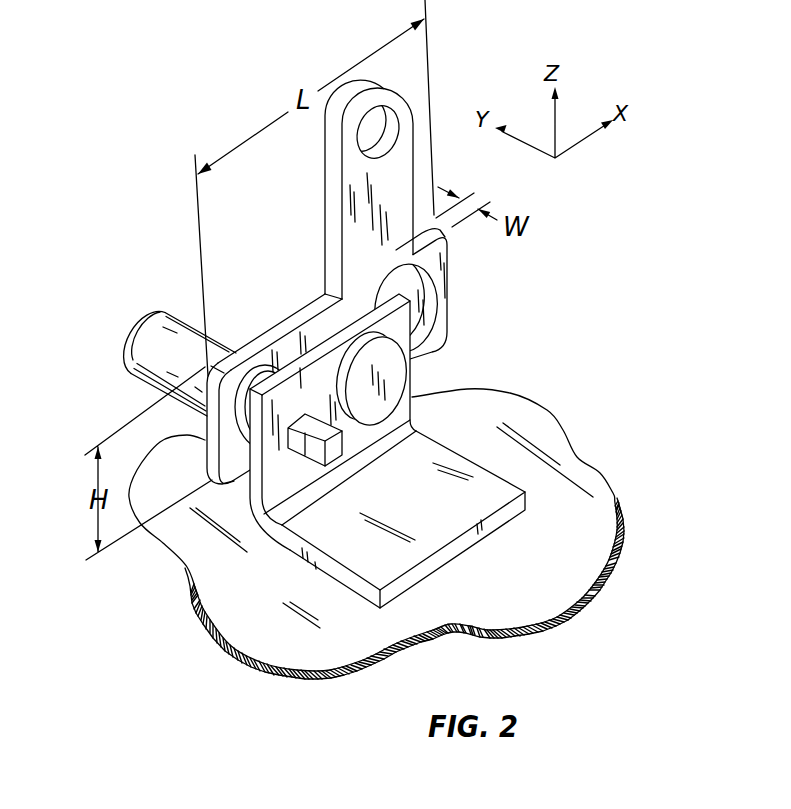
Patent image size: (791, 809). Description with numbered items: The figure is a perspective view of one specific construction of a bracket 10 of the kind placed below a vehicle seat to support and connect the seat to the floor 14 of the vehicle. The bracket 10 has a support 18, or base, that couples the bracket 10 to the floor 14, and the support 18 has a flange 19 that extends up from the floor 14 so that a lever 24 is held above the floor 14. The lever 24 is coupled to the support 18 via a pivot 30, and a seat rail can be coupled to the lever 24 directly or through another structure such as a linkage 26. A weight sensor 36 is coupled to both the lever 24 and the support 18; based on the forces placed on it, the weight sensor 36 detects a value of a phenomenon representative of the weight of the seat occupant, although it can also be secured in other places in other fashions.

The bracket 10 is at (570, 288).
The floor 14 is at (578, 527).
The support 18 is at (423, 450).
The flange 19 is at (257, 480).
The lever 24 is at (215, 447).
The linkage 26 is at (333, 165).
The pivot 30 is at (397, 370).
The weight sensor 36 is at (128, 336).